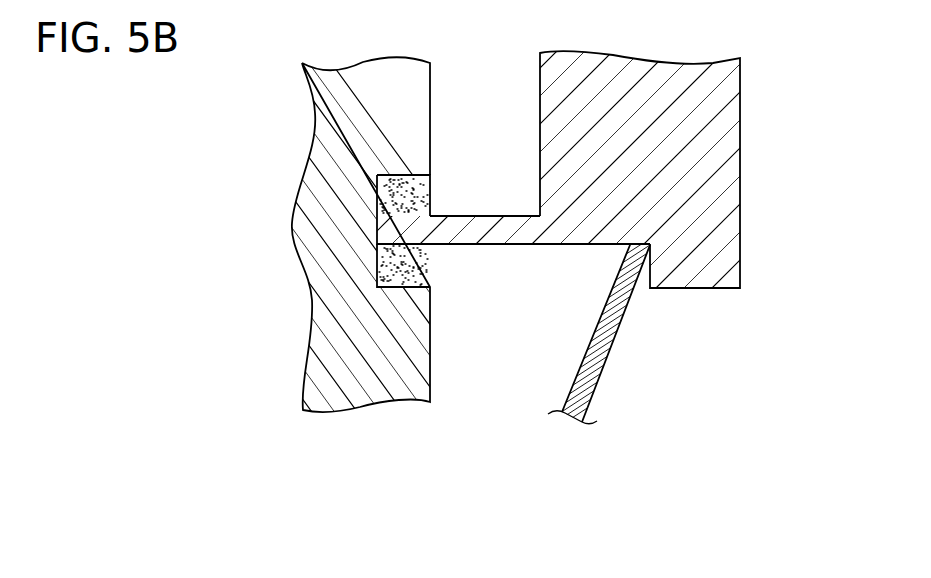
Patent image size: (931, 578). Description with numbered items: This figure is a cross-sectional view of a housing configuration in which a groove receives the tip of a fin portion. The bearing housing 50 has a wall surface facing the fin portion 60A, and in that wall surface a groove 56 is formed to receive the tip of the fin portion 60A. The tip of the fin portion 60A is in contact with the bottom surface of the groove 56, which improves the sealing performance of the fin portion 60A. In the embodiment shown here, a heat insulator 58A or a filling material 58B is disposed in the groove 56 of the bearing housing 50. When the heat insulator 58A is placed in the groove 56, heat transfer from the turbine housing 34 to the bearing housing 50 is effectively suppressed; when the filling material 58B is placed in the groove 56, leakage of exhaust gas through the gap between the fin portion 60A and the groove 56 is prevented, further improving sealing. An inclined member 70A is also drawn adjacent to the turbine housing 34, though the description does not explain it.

The bearing housing 50 is at (328, 133).
The turbine housing 34 is at (723, 148).
The fin portion 60A is at (493, 233).
The groove 56 is at (380, 263).
The heat insulator 58A is at (427, 267).
The filling material 58B is at (403, 195).
The inclined plate 70A is at (612, 326).